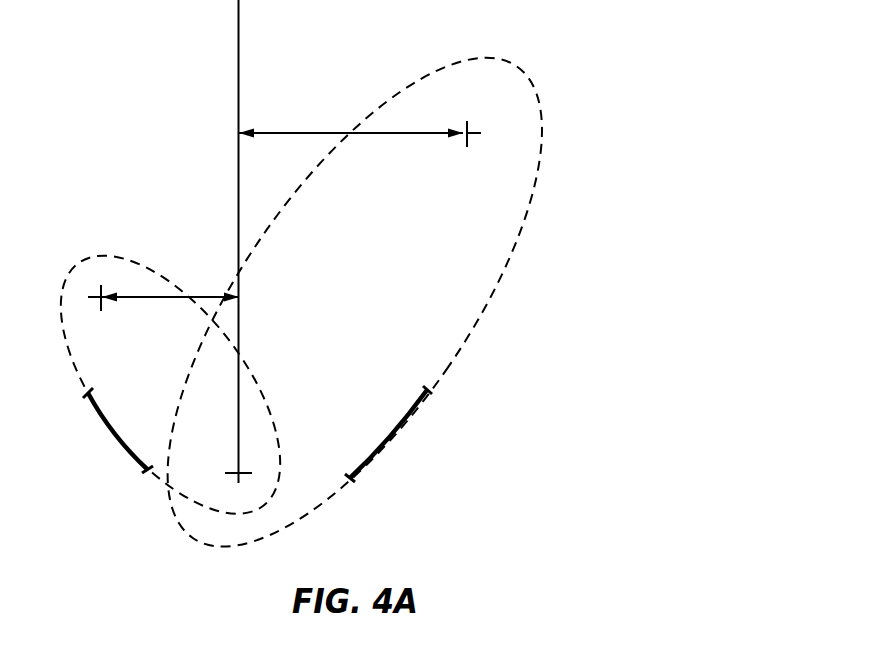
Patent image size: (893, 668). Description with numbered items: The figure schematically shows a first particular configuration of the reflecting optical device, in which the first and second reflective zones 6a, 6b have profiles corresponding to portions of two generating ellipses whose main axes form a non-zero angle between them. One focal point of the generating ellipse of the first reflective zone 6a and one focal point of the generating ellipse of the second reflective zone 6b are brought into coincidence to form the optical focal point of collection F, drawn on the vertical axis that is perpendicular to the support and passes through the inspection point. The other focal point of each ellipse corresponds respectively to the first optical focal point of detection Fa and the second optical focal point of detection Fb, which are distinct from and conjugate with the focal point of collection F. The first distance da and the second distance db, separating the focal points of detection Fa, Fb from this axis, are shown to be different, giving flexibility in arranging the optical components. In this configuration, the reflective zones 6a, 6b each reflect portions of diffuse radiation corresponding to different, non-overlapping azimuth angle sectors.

The first reflective zone 6a is at (112, 435).
The second reflective zone 6b is at (373, 457).
The optical focal point of collection F is at (237, 473).
The first optical focal point of detection Fa is at (89, 302).
The second optical focal point of detection Fb is at (481, 139).
The first distance da is at (170, 289).
The second distance db is at (351, 125).